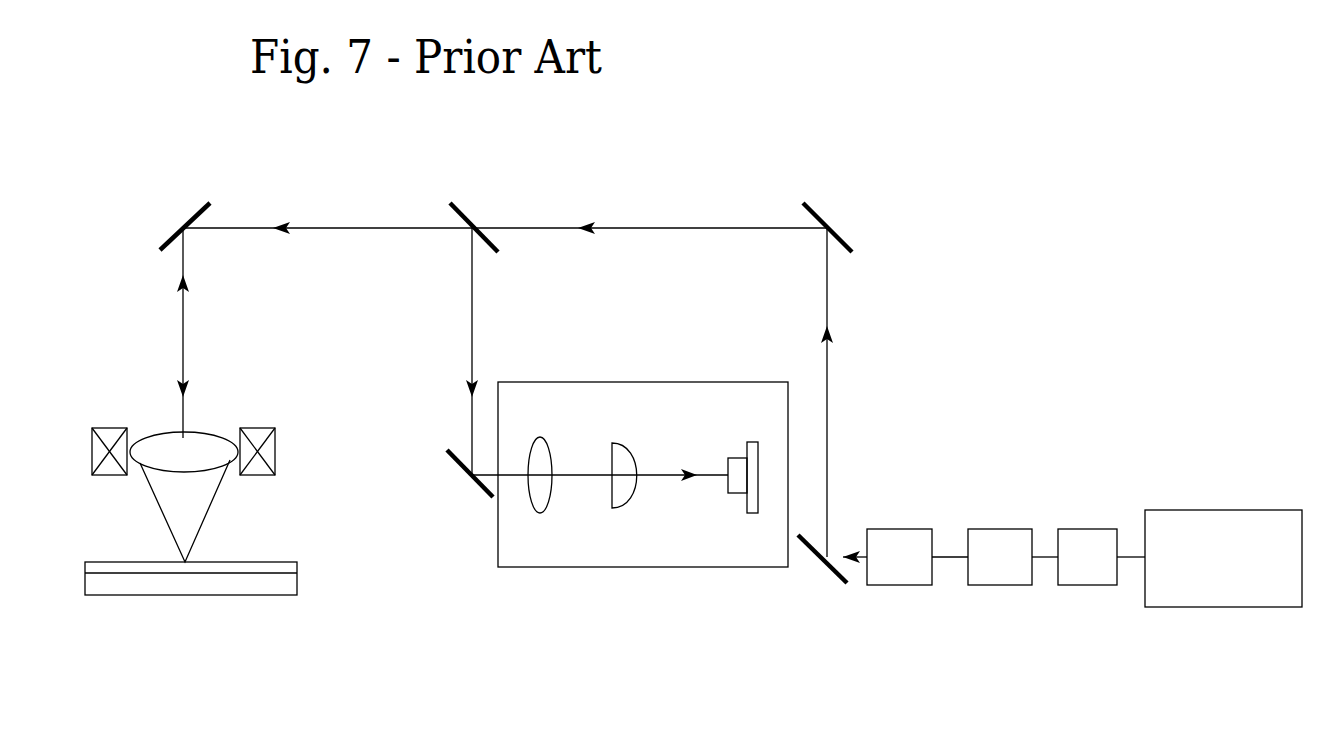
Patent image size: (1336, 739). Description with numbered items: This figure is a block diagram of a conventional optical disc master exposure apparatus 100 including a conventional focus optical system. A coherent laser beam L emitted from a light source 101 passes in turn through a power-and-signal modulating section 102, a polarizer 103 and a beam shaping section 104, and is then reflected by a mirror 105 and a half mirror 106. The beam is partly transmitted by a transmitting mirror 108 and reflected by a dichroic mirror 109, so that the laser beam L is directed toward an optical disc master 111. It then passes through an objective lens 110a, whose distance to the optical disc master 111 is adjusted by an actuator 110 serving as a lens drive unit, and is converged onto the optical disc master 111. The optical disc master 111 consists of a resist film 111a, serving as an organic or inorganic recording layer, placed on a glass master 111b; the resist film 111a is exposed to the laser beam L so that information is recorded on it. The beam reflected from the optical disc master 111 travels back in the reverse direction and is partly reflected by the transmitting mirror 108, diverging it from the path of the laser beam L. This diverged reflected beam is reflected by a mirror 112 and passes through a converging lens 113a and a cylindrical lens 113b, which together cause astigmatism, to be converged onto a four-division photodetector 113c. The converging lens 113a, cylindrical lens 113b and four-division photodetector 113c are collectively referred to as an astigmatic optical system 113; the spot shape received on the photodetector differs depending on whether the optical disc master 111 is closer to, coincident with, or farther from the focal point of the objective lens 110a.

The optical disc master exposure apparatus 100 is at (1005, 192).
The light source 101 is at (1223, 515).
The power-and-signal modulating section 102 is at (1093, 535).
The polarizer 103 is at (990, 537).
The beam shaping section 104 is at (895, 537).
The mirror 105 is at (818, 555).
The half mirror 106 is at (820, 213).
The transmitting mirror 108 is at (463, 213).
The dichroic mirror 109 is at (167, 240).
The actuator 110 is at (200, 468).
The objective lens 110a is at (162, 445).
The optical disc master 111 is at (197, 579).
The resist film 111a is at (250, 568).
The glass master 111b is at (250, 585).
The mirror 112 is at (458, 462).
The astigmatic optical system 113 is at (643, 443).
The converging lens 113a is at (543, 492).
The cylindrical lens 113b is at (627, 495).
The 4-division photodetector 113c is at (752, 495).
The laser beam L is at (948, 560).